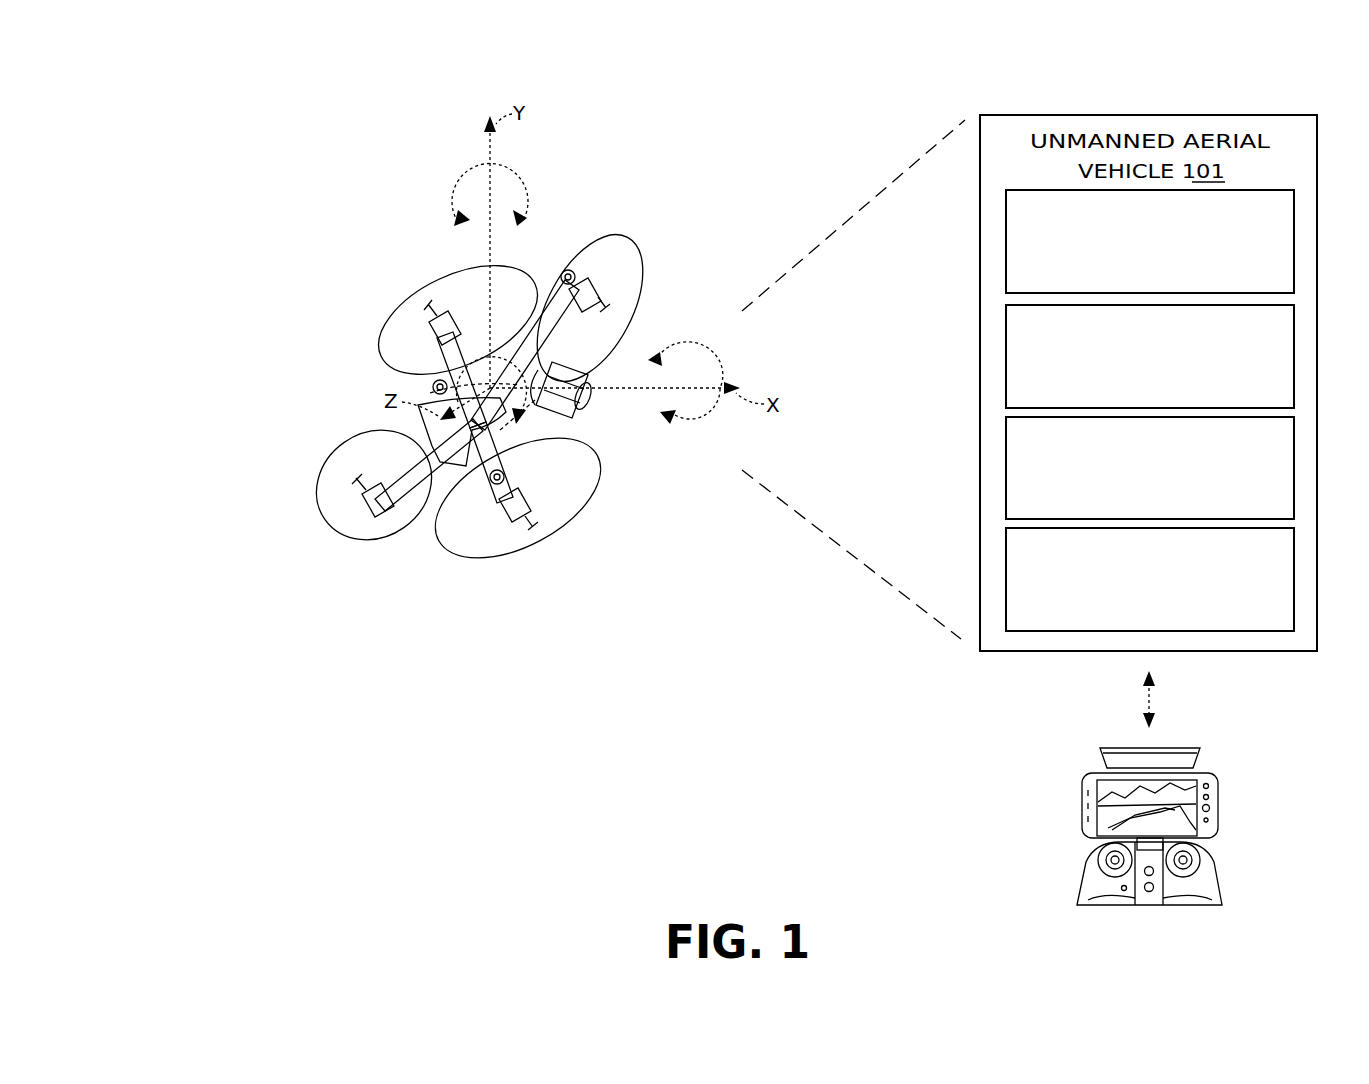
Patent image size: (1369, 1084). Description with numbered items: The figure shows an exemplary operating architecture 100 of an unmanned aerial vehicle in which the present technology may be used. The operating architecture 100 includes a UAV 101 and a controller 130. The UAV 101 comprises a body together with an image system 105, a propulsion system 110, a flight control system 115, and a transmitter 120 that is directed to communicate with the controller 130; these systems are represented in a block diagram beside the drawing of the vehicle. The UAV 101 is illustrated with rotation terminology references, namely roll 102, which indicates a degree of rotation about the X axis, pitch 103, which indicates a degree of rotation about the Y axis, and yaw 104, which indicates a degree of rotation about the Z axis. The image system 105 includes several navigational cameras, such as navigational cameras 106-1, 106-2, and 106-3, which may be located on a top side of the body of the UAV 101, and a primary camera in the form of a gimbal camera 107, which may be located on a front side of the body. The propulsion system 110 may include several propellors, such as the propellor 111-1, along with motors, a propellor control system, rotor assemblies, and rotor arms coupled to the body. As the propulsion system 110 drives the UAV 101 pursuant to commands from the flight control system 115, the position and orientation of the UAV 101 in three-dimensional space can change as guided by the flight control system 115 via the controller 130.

The operating architecture 100 is at (128, 130).
The unmanned aerial vehicle 101 is at (445, 397).
The roll 102 is at (708, 366).
The pitch 103 is at (476, 178).
The yaw 104 is at (495, 350).
The image system 105 is at (1167, 270).
The navigational camera 106-1 is at (435, 385).
The navigational camera 106-2 is at (494, 482).
The navigational camera 106-3 is at (560, 292).
The gimbal camera 107 is at (598, 362).
The propulsion system 110 is at (1167, 383).
The propellor 111-1 is at (436, 556).
The flight control system 115 is at (1167, 507).
The transmitter 120 is at (1167, 607).
The controller 130 is at (1097, 855).